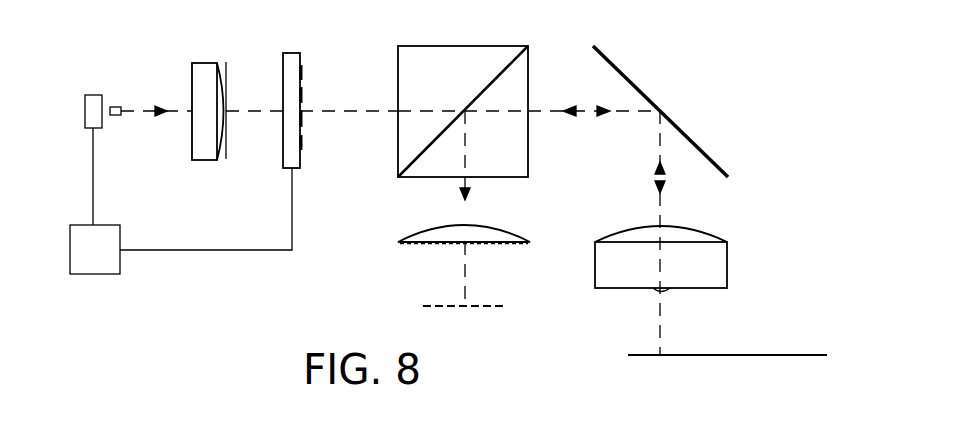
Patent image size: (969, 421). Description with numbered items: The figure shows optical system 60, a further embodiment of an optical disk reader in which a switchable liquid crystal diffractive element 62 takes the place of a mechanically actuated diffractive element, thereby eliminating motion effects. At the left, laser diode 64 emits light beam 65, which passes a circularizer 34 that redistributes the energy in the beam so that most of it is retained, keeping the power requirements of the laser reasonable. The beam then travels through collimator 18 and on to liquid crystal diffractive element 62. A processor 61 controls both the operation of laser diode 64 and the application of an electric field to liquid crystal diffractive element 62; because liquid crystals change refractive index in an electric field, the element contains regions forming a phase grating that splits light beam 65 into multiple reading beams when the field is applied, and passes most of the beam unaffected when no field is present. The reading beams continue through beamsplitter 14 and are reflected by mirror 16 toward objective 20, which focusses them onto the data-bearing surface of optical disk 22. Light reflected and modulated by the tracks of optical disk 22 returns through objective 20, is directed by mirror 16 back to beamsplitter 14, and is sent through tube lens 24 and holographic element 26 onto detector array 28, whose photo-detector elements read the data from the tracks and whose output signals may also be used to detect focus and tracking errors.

The beamsplitter 14 is at (455, 45).
The mirror 16 is at (697, 143).
The collimator 18 is at (200, 60).
The objective 20 is at (730, 258).
The optical disk 22 is at (740, 357).
The tube lens 24 is at (418, 232).
The holographic element 26 is at (490, 243).
The detector array 28 is at (490, 310).
The circularizer 34 is at (117, 118).
The optical system 60 is at (703, 70).
The processor 61 is at (97, 277).
The liquid crystal diffractive element 62 is at (293, 52).
The laser diode 64 is at (82, 122).
The light beam 65 is at (152, 108).